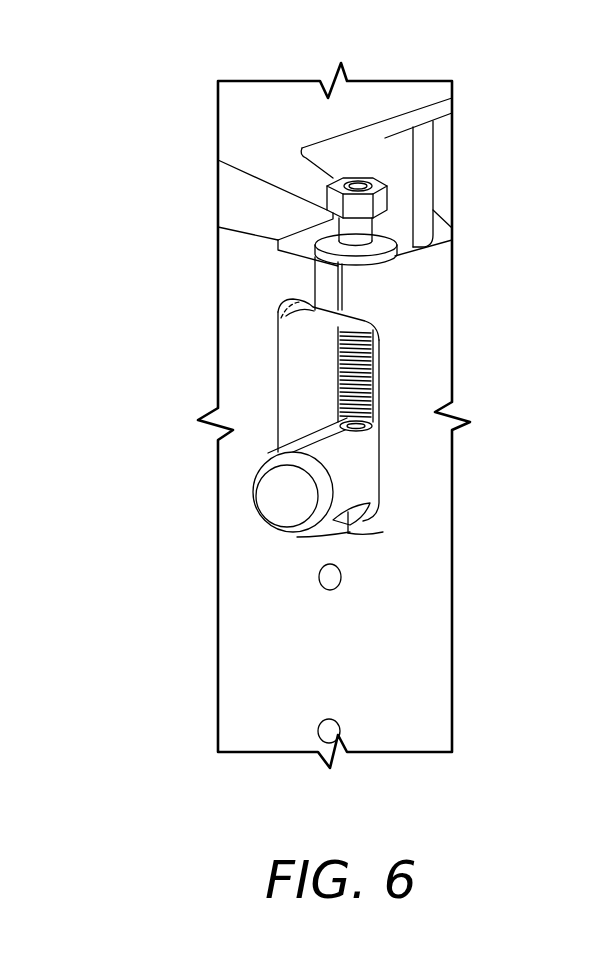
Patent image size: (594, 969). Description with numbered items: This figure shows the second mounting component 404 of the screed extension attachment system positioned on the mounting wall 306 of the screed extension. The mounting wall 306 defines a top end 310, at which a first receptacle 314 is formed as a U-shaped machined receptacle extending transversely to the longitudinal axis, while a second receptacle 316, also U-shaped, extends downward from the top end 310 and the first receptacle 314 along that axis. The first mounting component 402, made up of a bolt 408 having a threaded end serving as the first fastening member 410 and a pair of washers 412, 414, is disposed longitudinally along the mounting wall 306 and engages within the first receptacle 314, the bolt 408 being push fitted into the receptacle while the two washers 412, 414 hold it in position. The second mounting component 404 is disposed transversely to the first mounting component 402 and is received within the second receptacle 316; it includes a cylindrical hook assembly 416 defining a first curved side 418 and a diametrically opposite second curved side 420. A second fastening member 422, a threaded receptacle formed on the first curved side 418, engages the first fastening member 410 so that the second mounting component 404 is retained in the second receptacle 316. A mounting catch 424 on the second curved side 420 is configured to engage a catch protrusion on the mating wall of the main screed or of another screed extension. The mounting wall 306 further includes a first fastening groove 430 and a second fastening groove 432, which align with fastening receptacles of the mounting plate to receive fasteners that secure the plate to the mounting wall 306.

The mounting wall 306 is at (252, 260).
The top end 310 is at (263, 210).
The first receptacle 314 is at (318, 285).
The second receptacle 316 is at (308, 377).
The first mounting component 402 is at (360, 170).
The second mounting component 404 is at (268, 453).
The bolt 408 is at (380, 197).
The first fastening member 410 is at (372, 392).
The washer 412 is at (388, 236).
The washer 414 is at (322, 312).
The cylindrical hook assembly 416 is at (282, 507).
The first curved side 418 is at (313, 444).
The second curved side 420 is at (313, 535).
The second fastening member 422 is at (366, 433).
The mounting catch 424 is at (383, 532).
The first fastening groove 430 is at (330, 583).
The second fastening groove 432 is at (325, 729).